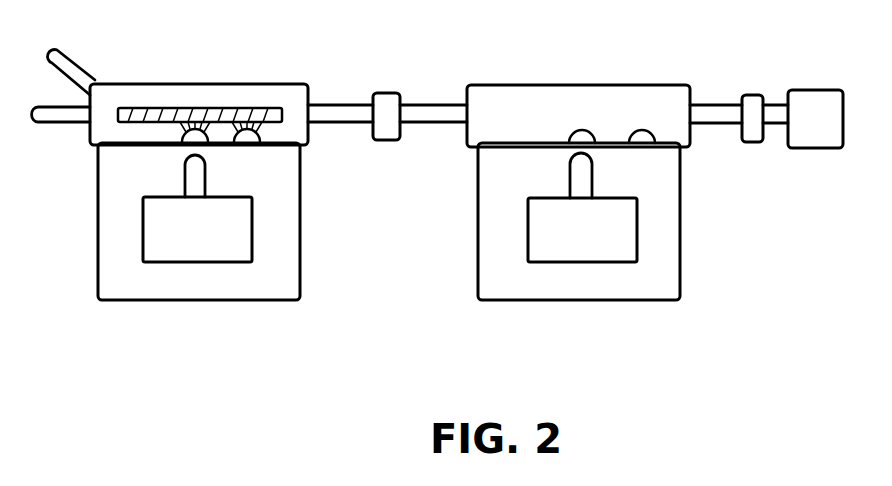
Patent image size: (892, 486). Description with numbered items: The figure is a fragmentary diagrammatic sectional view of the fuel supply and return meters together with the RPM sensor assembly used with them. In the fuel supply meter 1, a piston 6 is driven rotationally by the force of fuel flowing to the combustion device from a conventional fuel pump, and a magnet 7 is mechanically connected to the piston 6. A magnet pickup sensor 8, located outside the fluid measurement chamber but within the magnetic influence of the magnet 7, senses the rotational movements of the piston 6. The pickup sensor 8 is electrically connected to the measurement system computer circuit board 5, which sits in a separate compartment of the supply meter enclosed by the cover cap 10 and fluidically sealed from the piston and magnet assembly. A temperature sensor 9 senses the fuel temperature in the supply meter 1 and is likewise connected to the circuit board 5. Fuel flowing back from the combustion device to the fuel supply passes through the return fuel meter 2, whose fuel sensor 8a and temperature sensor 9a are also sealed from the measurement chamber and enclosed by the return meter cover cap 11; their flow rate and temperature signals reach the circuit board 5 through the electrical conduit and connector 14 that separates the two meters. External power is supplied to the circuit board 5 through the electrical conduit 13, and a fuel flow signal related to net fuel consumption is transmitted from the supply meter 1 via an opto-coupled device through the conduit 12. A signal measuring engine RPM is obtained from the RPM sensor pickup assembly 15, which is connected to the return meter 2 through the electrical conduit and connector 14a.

The fuel supply meter 1 is at (192, 291).
The return fuel meter 2 is at (574, 291).
The computer circuit board 5 is at (250, 108).
The piston 6 is at (189, 256).
The magnet 7 is at (206, 178).
The magnet pickup sensor 8 is at (180, 134).
The temperature sensor 9 is at (280, 131).
The fuel sensor 8a is at (571, 135).
The temperature sensor 9a is at (646, 133).
The cover cap 10 is at (173, 84).
The return meter cover cap 11 is at (598, 85).
The conduit 12 is at (35, 116).
The electrical conduit 13 is at (52, 57).
The electrical conduit and connector 14 is at (375, 93).
The electrical conduit and connector 14a is at (745, 95).
The RPM sensor pickup assembly 15 is at (822, 90).